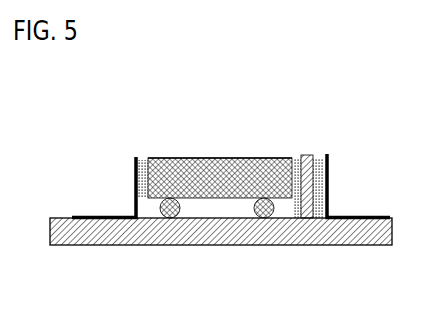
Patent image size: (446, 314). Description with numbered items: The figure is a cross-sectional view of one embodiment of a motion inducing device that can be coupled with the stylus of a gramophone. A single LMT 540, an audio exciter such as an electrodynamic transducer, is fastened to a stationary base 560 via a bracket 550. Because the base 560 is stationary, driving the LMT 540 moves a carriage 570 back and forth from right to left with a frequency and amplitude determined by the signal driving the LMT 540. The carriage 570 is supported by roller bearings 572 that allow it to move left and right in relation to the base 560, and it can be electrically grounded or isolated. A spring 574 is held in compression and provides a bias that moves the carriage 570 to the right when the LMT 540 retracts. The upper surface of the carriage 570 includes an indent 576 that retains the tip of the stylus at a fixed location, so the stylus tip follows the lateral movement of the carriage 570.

The LMT 540 is at (311, 165).
The bracket 550 is at (134, 212).
The base 560 is at (290, 203).
The carriage 570 is at (215, 172).
The roller bearings 572 is at (170, 215).
The spring 574 is at (143, 162).
The indent 576 is at (237, 166).